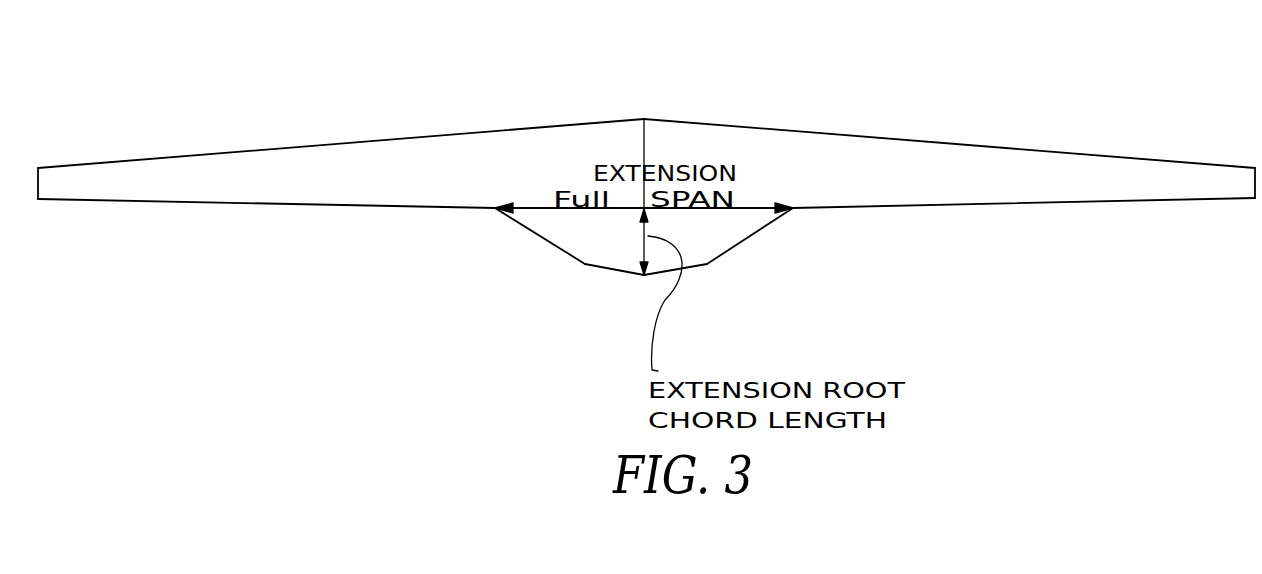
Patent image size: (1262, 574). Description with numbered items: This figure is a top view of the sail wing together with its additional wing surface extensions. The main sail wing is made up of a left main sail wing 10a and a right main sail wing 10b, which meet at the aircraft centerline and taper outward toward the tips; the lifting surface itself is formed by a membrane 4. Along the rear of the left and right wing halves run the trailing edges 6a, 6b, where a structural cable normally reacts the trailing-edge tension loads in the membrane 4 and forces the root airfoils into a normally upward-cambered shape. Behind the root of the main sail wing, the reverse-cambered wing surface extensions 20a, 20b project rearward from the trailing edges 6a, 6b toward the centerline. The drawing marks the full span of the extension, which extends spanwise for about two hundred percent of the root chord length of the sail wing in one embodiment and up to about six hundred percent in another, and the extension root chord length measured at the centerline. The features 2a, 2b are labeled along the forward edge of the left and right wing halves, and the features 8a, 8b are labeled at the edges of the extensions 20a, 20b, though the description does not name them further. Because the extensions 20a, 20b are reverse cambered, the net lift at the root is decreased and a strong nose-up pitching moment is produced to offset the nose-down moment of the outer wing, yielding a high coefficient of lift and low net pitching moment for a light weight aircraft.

The leading edge (left wing) 2a is at (368, 142).
The leading edge (right wing) 2b is at (852, 136).
The membrane 4 is at (895, 173).
The trailing edge 6a is at (387, 206).
The trailing edge 6b is at (1025, 205).
The extension root chord edge (left) 8a is at (613, 270).
The extension root chord edge (right) 8b is at (735, 247).
The left main sail wing 10a is at (280, 110).
The right main sail wing 10b is at (945, 160).
The wing surface extension 20a is at (530, 262).
The wing surface extension 20b is at (737, 297).